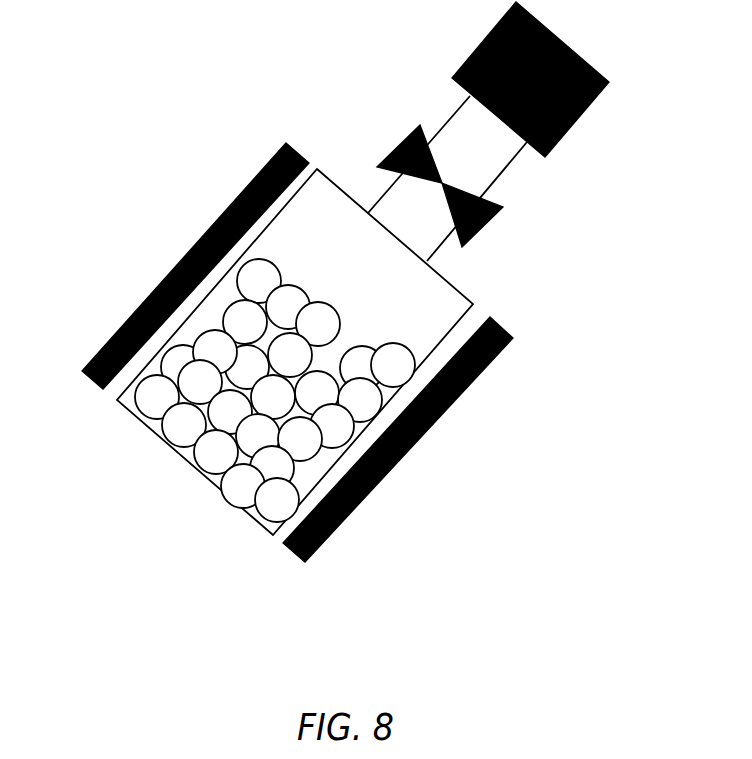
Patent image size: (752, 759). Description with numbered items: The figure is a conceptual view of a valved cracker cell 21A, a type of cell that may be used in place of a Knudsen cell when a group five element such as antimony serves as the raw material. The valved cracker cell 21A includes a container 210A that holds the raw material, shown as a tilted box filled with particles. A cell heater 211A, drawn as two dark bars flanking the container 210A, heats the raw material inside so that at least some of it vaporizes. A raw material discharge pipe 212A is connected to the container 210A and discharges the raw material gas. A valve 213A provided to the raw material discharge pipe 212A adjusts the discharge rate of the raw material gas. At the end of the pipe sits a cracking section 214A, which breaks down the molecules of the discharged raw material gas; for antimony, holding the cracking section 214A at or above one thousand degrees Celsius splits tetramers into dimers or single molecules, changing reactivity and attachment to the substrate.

The valved cracker cell 21A is at (120, 181).
The container 210A is at (177, 462).
The cell heater 211A is at (83, 372).
The raw material discharge pipe 212A is at (431, 132).
The valve 213A is at (497, 211).
The cracking section 214A is at (592, 103).